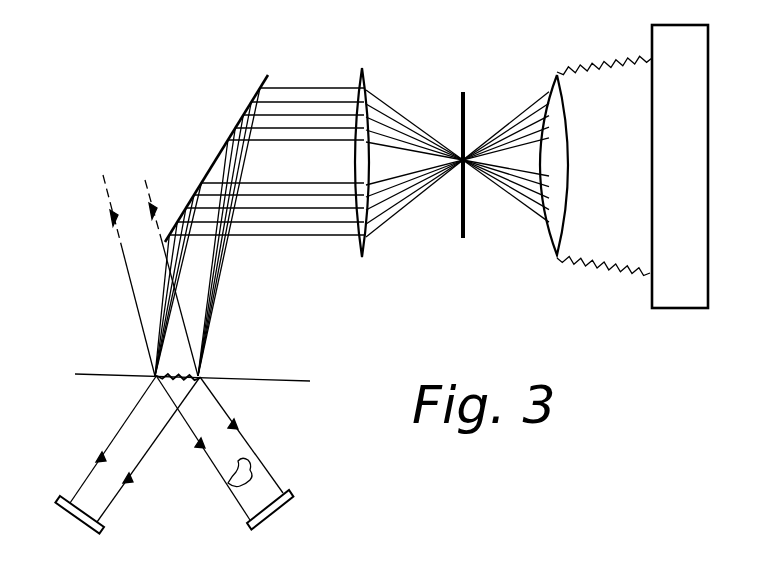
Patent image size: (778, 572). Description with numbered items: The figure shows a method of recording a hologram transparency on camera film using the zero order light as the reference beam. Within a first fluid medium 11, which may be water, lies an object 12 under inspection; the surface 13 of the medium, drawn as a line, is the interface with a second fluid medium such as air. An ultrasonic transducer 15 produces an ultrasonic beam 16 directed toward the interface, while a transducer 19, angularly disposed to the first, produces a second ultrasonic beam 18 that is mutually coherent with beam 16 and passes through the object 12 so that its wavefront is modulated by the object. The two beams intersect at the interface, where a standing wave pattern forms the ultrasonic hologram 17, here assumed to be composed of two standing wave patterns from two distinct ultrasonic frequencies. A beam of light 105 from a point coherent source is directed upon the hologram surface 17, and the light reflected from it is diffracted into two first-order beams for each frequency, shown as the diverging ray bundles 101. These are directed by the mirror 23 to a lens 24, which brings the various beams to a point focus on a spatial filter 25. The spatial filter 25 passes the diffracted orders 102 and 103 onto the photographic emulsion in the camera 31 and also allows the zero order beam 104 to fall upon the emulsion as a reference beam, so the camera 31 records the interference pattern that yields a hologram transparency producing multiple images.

The first fluid medium 11 is at (100, 425).
The object 12 is at (243, 472).
The surface 13 is at (93, 376).
The ultrasonic transducer 15 is at (83, 520).
The ultrasonic beam 16 is at (118, 498).
The ultrasonic hologram 17 is at (158, 372).
The second ultrasonic beam 18 is at (246, 440).
The transducer 19 is at (270, 512).
The mirror 23 is at (268, 75).
The lens 24 is at (371, 73).
The spatial filter 25 is at (468, 98).
The camera 31 is at (652, 305).
The scattered light rays 101 is at (215, 296).
The diffracted order 102 is at (497, 126).
The diffracted order 103 is at (475, 196).
The zero order beam 104 is at (479, 181).
The beam of light 105 is at (108, 192).